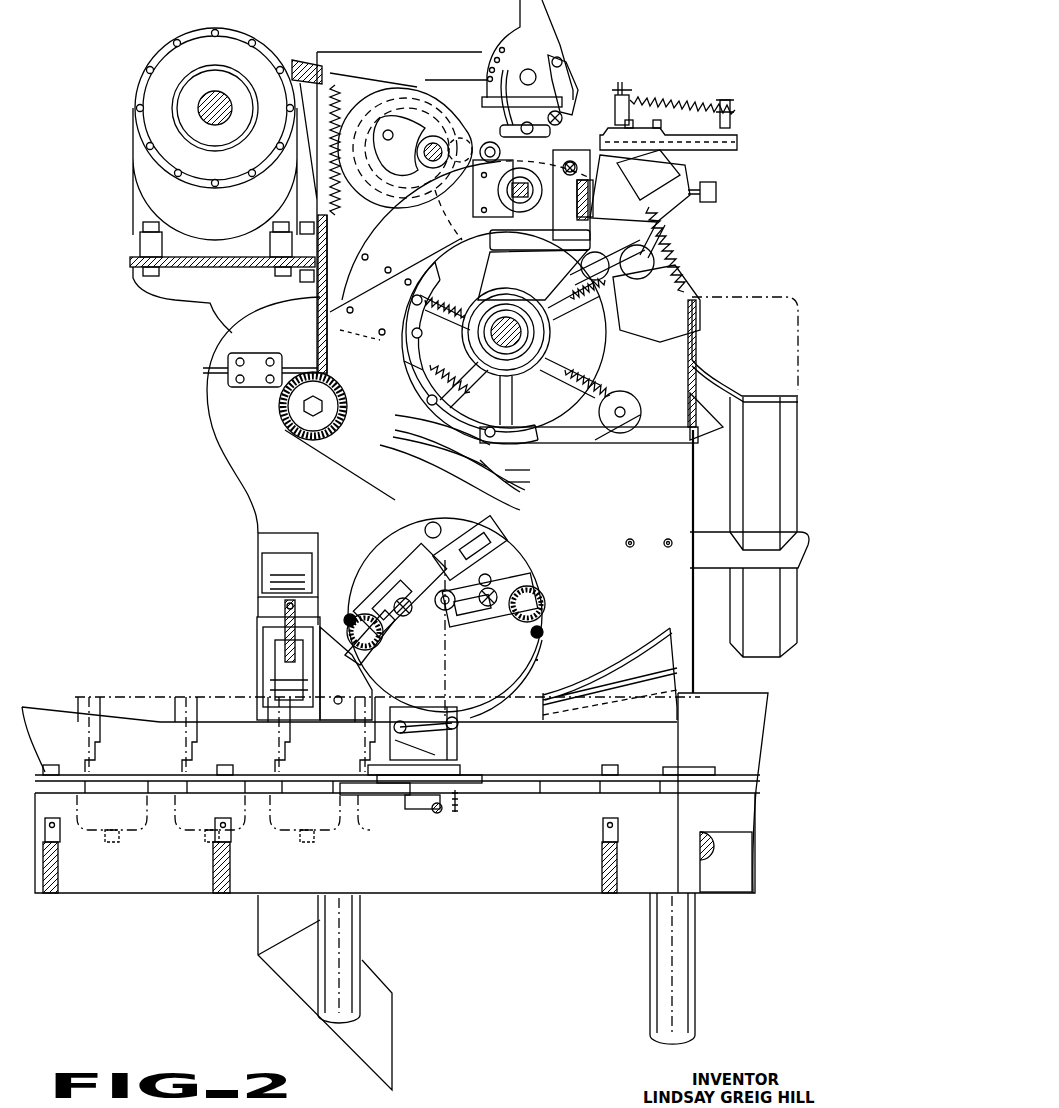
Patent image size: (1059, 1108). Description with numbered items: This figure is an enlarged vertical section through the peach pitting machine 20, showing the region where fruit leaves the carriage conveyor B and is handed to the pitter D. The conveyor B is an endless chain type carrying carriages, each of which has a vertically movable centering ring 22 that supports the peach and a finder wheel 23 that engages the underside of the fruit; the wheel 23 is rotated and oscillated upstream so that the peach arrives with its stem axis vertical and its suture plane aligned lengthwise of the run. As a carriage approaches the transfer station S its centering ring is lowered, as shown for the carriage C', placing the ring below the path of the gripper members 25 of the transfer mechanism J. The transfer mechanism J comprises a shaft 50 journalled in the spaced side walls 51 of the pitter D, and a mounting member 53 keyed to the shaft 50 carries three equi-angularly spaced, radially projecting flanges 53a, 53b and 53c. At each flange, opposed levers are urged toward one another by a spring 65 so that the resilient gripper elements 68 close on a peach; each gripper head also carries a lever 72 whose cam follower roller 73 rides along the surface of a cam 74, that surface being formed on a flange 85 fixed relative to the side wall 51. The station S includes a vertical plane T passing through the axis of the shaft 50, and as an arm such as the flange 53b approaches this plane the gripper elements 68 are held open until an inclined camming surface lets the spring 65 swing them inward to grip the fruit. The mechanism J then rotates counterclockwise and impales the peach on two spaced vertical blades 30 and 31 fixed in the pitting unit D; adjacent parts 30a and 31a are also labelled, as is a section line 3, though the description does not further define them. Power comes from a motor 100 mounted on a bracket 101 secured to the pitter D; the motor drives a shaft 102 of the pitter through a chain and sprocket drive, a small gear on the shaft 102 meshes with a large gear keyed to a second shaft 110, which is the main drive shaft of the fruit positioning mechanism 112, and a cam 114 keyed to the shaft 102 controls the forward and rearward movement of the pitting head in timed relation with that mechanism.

The motor 100 is at (162, 101).
The bracket 101 is at (130, 261).
The cam 114 is at (405, 92).
The shaft 102 is at (433, 170).
The second shaft 110 is at (505, 318).
The pitting unit D is at (655, 84).
The fruit positioning mechanism 112 is at (654, 249).
The vertical blade 31 is at (395, 410).
The gripper members 25 is at (395, 430).
The vertical blade 30 is at (392, 456).
The nut 31a is at (528, 466).
The arm 30a is at (525, 485).
The cam 74 is at (520, 510).
The shaft 50 is at (470, 545).
The flange 53c is at (488, 562).
The spring 65 is at (432, 520).
The gripper element 68 is at (345, 640).
The section line 3 is at (409, 579).
The lever 72 is at (350, 614).
The cam follower roller 73 is at (283, 613).
The transfer station S is at (480, 708).
The vertical plane T is at (455, 632).
The transfer mechanism J is at (600, 531).
The side walls 51 is at (672, 596).
The centering ring 22 is at (85, 697).
The carriage C' is at (361, 692).
The machine 20 is at (172, 566).
The flange 85 is at (367, 567).
The mounting member 53 is at (422, 547).
The flange 53a is at (420, 543).
The flange 53b is at (448, 629).
The finder wheel 23 is at (388, 725).
The carriage conveyor B is at (340, 802).